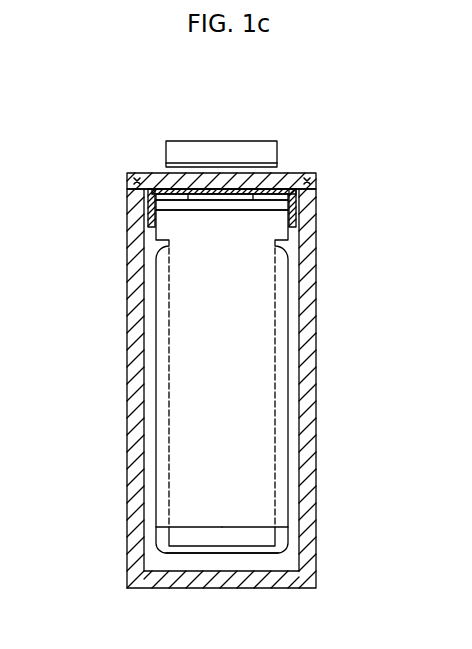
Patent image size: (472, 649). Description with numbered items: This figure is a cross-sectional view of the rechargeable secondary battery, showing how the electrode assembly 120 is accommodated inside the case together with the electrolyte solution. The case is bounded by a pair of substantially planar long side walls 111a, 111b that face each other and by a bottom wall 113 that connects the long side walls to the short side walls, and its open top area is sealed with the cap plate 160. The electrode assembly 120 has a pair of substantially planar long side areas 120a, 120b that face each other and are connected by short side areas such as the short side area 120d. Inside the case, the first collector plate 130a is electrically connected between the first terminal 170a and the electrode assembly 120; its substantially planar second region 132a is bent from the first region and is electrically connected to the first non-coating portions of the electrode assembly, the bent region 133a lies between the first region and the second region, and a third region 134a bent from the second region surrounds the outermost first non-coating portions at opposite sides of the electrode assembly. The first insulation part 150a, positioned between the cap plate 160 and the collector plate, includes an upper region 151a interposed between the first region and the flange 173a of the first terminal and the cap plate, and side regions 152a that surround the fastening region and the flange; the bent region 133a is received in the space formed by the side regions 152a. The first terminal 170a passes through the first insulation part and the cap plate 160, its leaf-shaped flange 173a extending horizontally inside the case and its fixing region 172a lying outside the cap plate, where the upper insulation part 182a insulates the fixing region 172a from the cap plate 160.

The long side wall 111a is at (128, 330).
The long side wall 111b is at (316, 388).
The bottom wall 113 is at (260, 588).
The electrode assembly 120 is at (213, 558).
The long side area 120a is at (154, 530).
The long side area 120b is at (288, 531).
The short side area 120d is at (178, 553).
The first collector plate 130a is at (297, 260).
The second region 132a is at (252, 348).
The bent region 133a is at (298, 196).
The third region 134a is at (293, 287).
The first insulation part 150a is at (130, 180).
The upper region 151a is at (300, 179).
The side regions 152a is at (148, 207).
The cap plate 160 is at (157, 177).
The first terminal 170a is at (261, 145).
The fixing region 172a is at (248, 148).
The flange 173a is at (217, 202).
The upper insulation part 182a is at (262, 167).